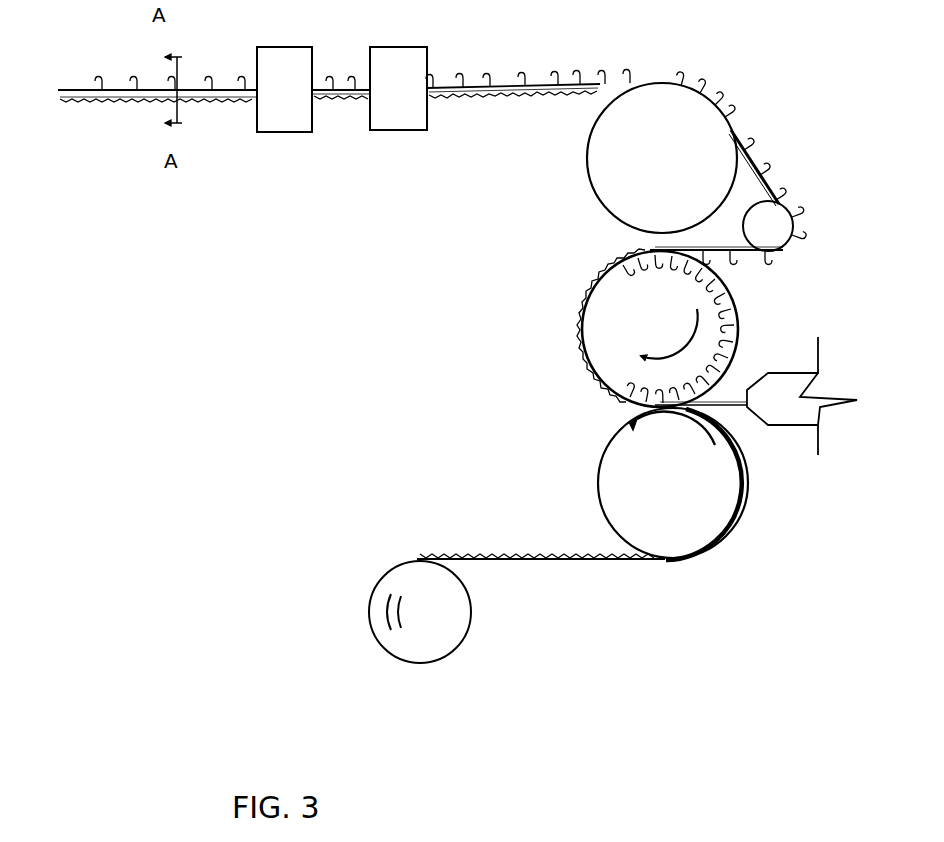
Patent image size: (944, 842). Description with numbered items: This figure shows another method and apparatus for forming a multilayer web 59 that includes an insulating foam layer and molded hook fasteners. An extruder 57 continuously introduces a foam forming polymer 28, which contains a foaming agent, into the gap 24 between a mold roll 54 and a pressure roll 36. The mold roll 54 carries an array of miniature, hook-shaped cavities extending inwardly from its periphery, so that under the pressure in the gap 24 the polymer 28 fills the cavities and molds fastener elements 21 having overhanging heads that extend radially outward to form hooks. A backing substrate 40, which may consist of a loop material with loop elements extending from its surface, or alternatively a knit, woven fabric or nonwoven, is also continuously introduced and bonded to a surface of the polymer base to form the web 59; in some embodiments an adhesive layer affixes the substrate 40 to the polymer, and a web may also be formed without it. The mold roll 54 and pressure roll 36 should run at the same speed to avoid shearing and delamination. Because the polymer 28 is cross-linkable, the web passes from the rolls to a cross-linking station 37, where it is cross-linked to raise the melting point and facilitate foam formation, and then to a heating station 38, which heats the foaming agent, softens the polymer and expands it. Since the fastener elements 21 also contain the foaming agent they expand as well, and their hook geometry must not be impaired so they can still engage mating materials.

The multilayer web 59 is at (108, 119).
The heating station 38 is at (281, 64).
The cross-linking station 37 is at (401, 64).
The fastener elements 21 is at (541, 62).
The mold roll 54 is at (620, 318).
The foam forming polymer 28 is at (727, 400).
The pressure roll 36 is at (618, 473).
The gap 24 is at (736, 420).
The extruder 57 is at (813, 416).
The backing substrate 40 is at (550, 566).